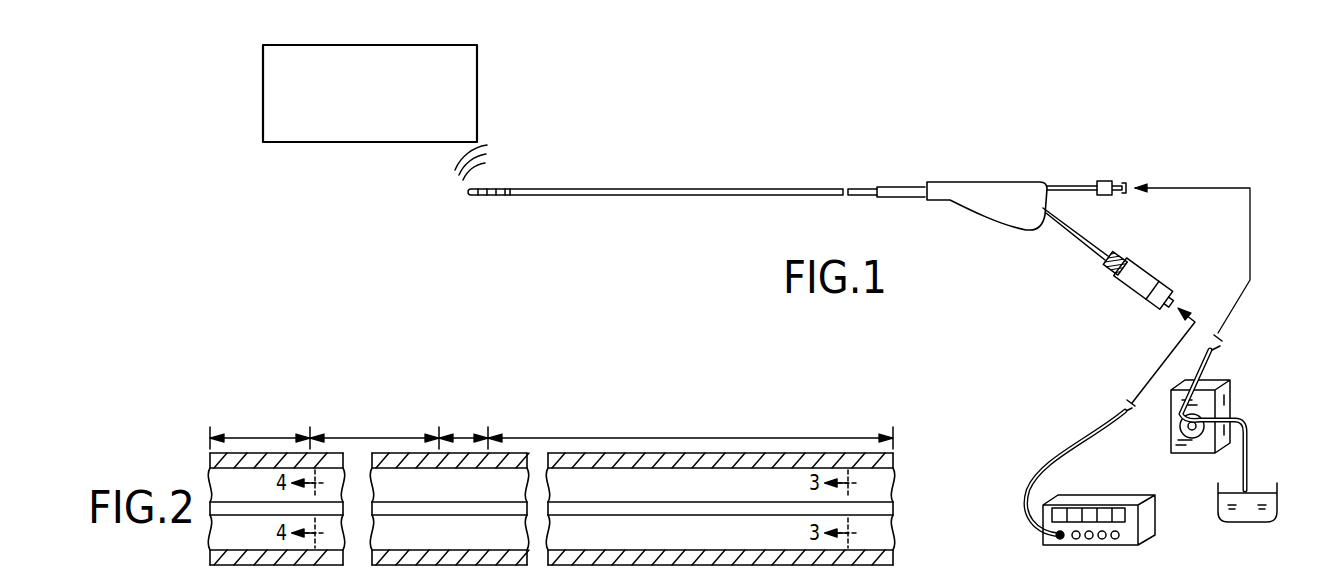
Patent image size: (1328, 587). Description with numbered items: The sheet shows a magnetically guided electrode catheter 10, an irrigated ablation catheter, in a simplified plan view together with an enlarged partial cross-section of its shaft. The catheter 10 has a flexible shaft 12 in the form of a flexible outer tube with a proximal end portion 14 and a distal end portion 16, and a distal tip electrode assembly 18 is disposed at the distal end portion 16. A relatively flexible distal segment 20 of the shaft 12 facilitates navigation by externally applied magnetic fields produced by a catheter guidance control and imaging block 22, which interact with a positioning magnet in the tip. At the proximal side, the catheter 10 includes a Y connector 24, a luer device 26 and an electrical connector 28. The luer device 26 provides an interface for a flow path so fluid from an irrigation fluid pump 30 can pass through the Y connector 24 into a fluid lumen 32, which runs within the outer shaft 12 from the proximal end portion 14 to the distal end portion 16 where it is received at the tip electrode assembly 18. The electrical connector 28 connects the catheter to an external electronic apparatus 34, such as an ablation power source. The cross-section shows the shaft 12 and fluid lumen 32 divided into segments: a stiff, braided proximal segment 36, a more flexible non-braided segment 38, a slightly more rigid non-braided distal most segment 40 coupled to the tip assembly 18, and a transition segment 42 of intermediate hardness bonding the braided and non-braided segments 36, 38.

In FIG. 1, the magnetically guided electrode catheter 10 is at (725, 128).
In FIG. 1, the flexible shaft 12 is at (789, 188).
In FIG. 2, the flexible shaft 12 is at (893, 460).
In FIG. 1, the proximal end portion 14 is at (877, 197).
In FIG. 2, the proximal end portion 14 is at (885, 394).
In FIG. 1, the distal end portion 16 is at (508, 177).
In FIG. 2, the distal end portion 16 is at (224, 396).
In FIG. 1, the distal tip electrode assembly 18 is at (510, 202).
In FIG. 1, the flexible distal segment 20 is at (561, 222).
In FIG. 1, the catheter guidance control and imaging block 22 is at (477, 68).
In FIG. 1, the Y connector 24 is at (968, 182).
In FIG. 1, the luer device 26 is at (1118, 197).
In FIG. 1, the electrical connector 28 is at (1122, 282).
In FIG. 1, the irrigation fluid pump 30 is at (1247, 362).
In FIG. 1, the fluid lumen 32 is at (1052, 185).
In FIG. 2, the fluid lumen 32 is at (893, 508).
In FIG. 1, the electronic apparatus 34 is at (1122, 465).
In FIG. 2, the proximal segment 36 is at (627, 437).
In FIG. 2, the intermediate segment 38 is at (387, 437).
In FIG. 2, the distal most segment 40 is at (253, 437).
In FIG. 2, the transition segment 42 is at (464, 437).